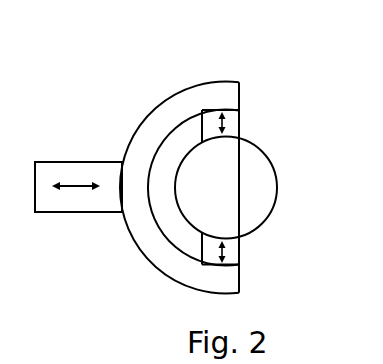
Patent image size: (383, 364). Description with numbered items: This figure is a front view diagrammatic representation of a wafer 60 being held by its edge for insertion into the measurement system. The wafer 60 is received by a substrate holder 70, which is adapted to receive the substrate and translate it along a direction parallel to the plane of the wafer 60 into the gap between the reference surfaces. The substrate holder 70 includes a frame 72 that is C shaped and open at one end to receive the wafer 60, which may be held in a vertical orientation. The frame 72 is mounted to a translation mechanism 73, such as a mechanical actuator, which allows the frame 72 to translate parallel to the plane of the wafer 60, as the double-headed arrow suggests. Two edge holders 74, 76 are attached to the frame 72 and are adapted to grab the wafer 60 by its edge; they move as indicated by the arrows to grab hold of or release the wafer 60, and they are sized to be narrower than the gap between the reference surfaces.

The substrate holder 70 is at (209, 170).
The frame 72 is at (134, 154).
The translation mechanism 73 is at (82, 207).
The edge holder 74 is at (242, 120).
The edge holder 76 is at (242, 252).
The wafer 60 is at (257, 192).